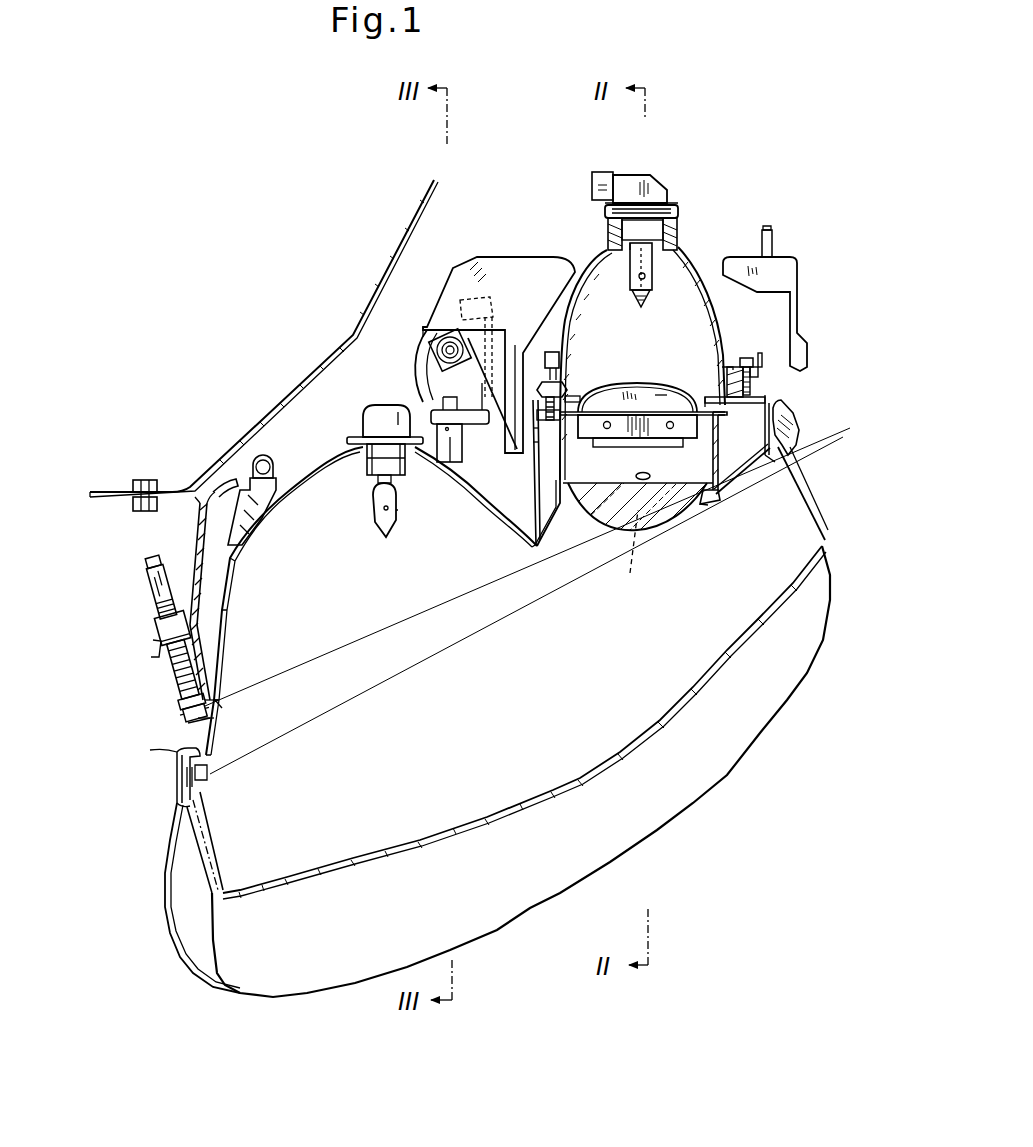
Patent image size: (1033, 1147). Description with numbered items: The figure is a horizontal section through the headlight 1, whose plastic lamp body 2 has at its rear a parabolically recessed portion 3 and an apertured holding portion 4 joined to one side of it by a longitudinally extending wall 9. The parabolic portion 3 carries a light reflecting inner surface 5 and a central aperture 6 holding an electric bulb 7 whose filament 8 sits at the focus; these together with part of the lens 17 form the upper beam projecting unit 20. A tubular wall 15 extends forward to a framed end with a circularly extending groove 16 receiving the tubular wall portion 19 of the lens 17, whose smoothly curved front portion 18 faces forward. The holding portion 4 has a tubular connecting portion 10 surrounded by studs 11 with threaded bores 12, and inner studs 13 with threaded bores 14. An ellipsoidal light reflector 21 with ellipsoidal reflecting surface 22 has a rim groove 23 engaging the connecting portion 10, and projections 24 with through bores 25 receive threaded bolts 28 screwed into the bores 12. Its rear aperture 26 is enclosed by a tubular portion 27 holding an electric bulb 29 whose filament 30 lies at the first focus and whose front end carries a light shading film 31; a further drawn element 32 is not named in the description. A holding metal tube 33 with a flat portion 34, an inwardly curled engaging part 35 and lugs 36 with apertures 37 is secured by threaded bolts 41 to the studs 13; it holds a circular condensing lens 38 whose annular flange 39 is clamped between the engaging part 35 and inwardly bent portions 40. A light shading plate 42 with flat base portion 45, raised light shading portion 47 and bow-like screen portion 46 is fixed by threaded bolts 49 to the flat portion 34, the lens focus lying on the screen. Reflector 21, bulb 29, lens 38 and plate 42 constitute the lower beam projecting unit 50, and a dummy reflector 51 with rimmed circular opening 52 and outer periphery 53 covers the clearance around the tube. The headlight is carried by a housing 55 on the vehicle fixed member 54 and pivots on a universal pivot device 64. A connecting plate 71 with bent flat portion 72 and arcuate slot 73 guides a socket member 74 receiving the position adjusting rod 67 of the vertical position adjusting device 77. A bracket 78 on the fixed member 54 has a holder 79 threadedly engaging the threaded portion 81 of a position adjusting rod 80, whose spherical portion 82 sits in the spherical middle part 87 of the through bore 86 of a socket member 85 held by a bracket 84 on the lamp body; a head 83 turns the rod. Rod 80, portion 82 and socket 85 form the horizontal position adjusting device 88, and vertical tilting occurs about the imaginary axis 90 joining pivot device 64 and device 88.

The headlight 1 is at (310, 335).
The lamp body 2 is at (240, 542).
The parabolically recessed portion 3 is at (308, 482).
The apertured holding portion 4 is at (558, 392).
The light reflecting inner surface 5 is at (300, 487).
The aperture 6 is at (367, 458).
The electric bulb 7 is at (373, 508).
The filament 8 is at (398, 510).
The longitudinally extending wall 9 is at (528, 540).
The tubular connecting portion 10 is at (560, 367).
The studs 11 is at (760, 400).
The threaded bore 12 is at (757, 385).
The studs 13 is at (533, 407).
The threaded bore 14 is at (543, 390).
The tubular wall 15 is at (190, 750).
The circularly extending groove 16 is at (207, 773).
The lens 17 is at (727, 782).
The front portion 18 is at (657, 830).
The tubular wall portion 19 is at (170, 833).
The upper beam projecting unit 20 is at (373, 397).
The ellipsoidal light reflector 21 is at (680, 250).
The ellipsoidal light reflecting inner surface 22 is at (705, 297).
The circularly extending groove 23 is at (740, 360).
The projections 24 is at (762, 358).
The through bore 25 is at (758, 373).
The aperture 26 is at (678, 228).
The tubular portion 27 is at (670, 197).
The threaded bolts 28 is at (747, 360).
The electric bulb 29 is at (630, 272).
The filament 30 is at (650, 300).
The light shading film 31 is at (637, 303).
The filament 32 is at (647, 277).
The holding metal tube 33 is at (720, 462).
The flat portion 34 is at (653, 447).
The engaging part 35 is at (703, 502).
The lugs 36 is at (530, 428).
The aperture 37 is at (530, 436).
The circular condensing lens 38 is at (672, 510).
The annular flange 39 is at (567, 482).
The portions 40 is at (637, 473).
The threaded bolts 41 is at (540, 452).
The light shading plate 42 is at (639, 386).
The flat base portion 45 is at (660, 410).
The bow-like screen portion 46 is at (656, 413).
The light shading portion 47 is at (672, 418).
The threaded bolts 49 is at (607, 420).
The lower beam projecting unit 50 is at (655, 165).
The dummy reflector 51 is at (735, 476).
The rimmed circular opening 52 is at (708, 505).
The outer periphery 53 is at (757, 456).
The fixed member 54 is at (117, 490).
The housing 55 is at (797, 272).
The universal pivot device 64 is at (629, 555).
The position adjusting rod 67 is at (432, 335).
The connecting plate 71 is at (427, 372).
The flat portion 72 is at (470, 350).
The arcuate slot 73 is at (445, 368).
The socket member 74 is at (437, 384).
The vertical position adjusting device 77 is at (459, 316).
The bracket 78 is at (153, 520).
The holder 79 is at (160, 627).
The position adjusting rod 80 is at (150, 590).
The threaded portion 81 is at (178, 668).
The spherical portion 82 is at (200, 720).
The head 83 is at (147, 561).
The bracket 84 is at (220, 707).
The socket member 85 is at (190, 712).
The through bore 86 is at (206, 722).
The spherical middle part 87 is at (185, 702).
The horizontal position adjusting device 88 is at (224, 703).
The imaginary axis 90 is at (385, 629).